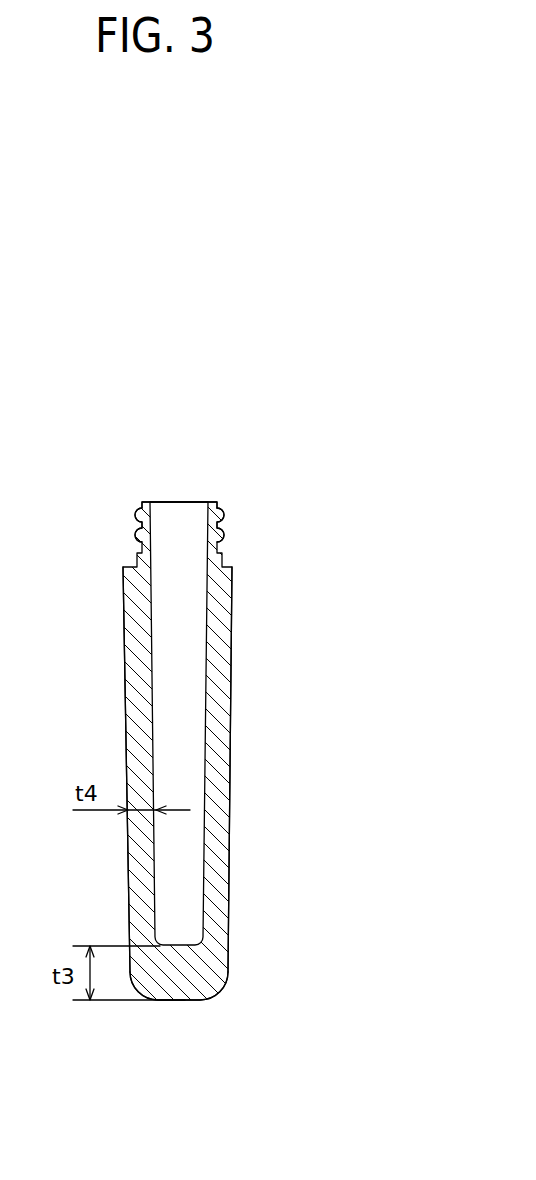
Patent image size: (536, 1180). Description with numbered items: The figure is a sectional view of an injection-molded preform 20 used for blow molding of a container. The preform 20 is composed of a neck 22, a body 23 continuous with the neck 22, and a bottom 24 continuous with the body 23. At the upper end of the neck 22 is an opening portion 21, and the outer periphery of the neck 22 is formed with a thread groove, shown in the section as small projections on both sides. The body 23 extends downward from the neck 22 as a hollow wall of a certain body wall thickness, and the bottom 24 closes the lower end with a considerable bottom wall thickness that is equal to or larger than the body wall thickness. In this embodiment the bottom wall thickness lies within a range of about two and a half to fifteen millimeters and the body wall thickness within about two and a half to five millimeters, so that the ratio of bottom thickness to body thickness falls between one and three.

The preform 20 is at (333, 461).
The opening portion 21 is at (210, 504).
The neck 22 is at (217, 506).
The body 23 is at (232, 752).
The bottom 24 is at (220, 977).